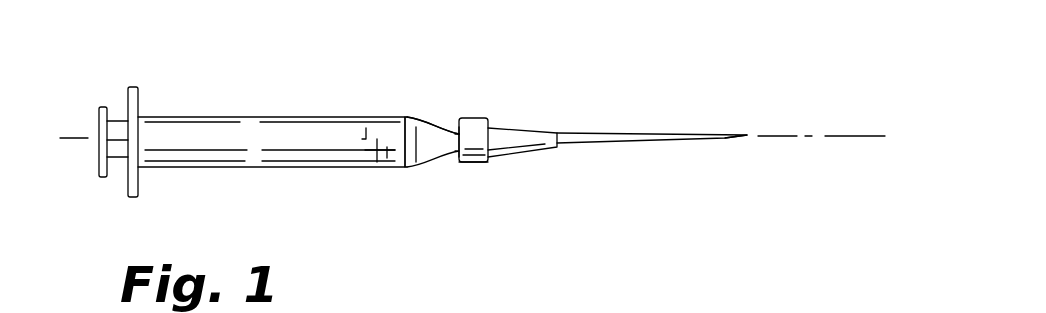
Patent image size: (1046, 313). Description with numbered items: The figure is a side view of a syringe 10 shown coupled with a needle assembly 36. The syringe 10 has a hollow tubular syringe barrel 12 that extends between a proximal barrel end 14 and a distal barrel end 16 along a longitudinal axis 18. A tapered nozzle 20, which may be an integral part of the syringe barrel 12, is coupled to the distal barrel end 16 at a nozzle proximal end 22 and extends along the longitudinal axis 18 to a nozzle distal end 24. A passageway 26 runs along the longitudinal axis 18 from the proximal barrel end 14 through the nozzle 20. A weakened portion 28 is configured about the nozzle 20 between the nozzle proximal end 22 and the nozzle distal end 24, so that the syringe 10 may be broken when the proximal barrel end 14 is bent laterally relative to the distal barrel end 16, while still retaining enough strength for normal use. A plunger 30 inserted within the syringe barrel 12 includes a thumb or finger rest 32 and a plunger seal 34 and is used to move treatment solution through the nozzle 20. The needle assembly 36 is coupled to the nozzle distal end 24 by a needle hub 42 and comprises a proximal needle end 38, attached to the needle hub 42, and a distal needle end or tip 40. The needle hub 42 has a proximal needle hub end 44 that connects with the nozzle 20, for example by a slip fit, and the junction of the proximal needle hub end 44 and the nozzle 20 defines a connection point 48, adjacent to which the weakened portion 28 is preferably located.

The syringe 10 is at (281, 104).
The syringe barrel 12 is at (230, 117).
The proximal barrel end 14 is at (138, 192).
The distal barrel end 16 is at (418, 166).
The longitudinal axis 18 is at (835, 136).
The nozzle 20 is at (432, 127).
The nozzle proximal end 22 is at (416, 118).
The nozzle distal end 24 is at (459, 126).
The passageway 26 is at (273, 148).
The weakened portion 28 is at (444, 158).
The plunger 30 is at (118, 116).
The thumb or finger rest 32 is at (101, 178).
The plunger seal 34 is at (377, 164).
The needle assembly 36 is at (568, 125).
The proximal needle end 38 is at (558, 147).
The distal needle end or tip 40 is at (747, 135).
The needle hub 42 is at (480, 140).
The proximal needle hub end 44 is at (466, 162).
The connection point 48 is at (454, 162).